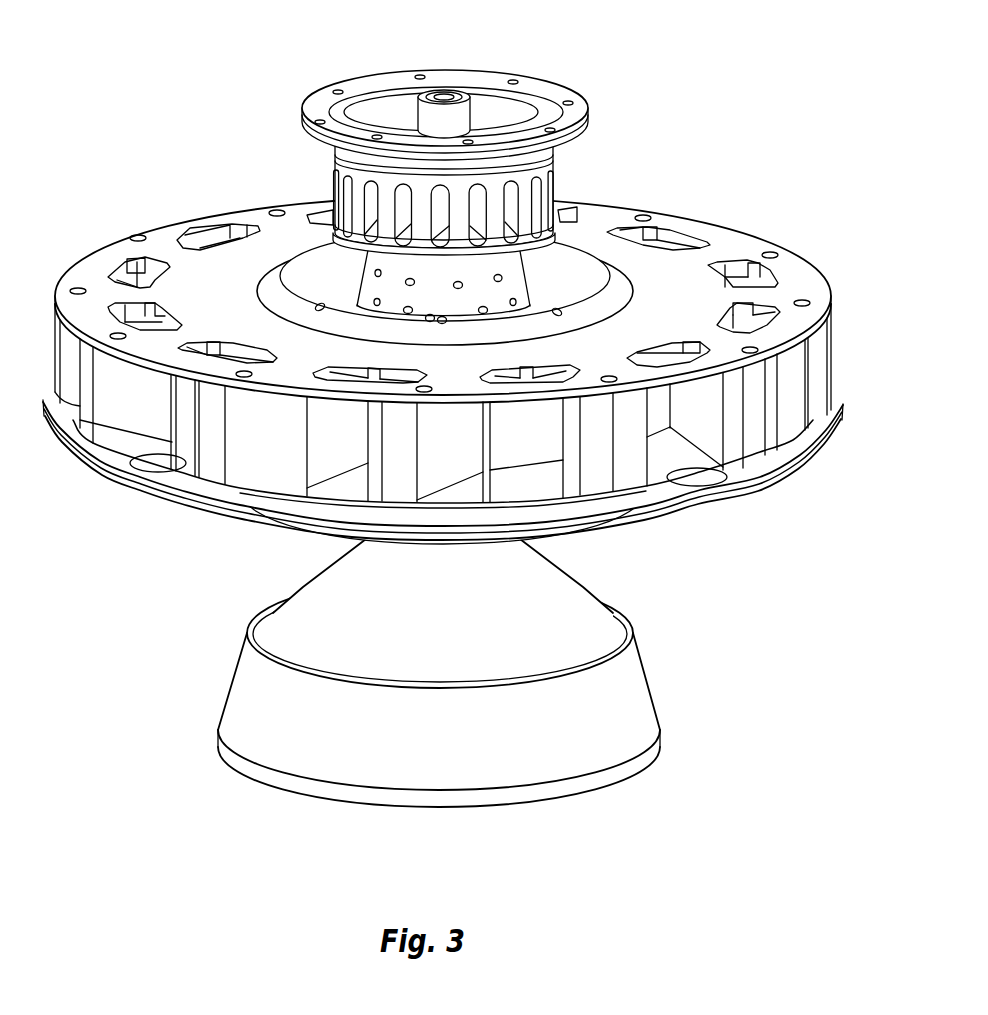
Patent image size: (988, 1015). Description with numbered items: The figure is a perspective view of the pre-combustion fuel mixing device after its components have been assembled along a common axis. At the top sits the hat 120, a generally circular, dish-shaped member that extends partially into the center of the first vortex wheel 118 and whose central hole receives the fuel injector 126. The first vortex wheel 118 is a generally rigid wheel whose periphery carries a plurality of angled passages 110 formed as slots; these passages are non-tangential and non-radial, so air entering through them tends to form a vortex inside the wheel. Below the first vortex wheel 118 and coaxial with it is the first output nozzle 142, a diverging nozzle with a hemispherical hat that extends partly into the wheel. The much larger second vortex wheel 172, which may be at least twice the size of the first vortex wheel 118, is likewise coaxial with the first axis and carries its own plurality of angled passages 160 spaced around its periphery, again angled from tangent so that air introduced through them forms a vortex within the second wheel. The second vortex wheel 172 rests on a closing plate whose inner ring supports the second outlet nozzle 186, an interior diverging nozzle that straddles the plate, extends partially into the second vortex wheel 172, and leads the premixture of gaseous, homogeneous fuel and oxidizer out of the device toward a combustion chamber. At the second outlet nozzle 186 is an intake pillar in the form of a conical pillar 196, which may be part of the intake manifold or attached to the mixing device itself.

The angled passages 110 is at (507, 267).
The first vortex wheel 118 is at (540, 197).
The hat 120 is at (553, 88).
The fuel injector 126 is at (472, 105).
The first output nozzle 142 is at (553, 247).
The angled passages 160 is at (800, 384).
The second vortex wheel 172 is at (803, 272).
The second outlet nozzle 186 is at (570, 533).
The conical pillar 196 is at (647, 698).